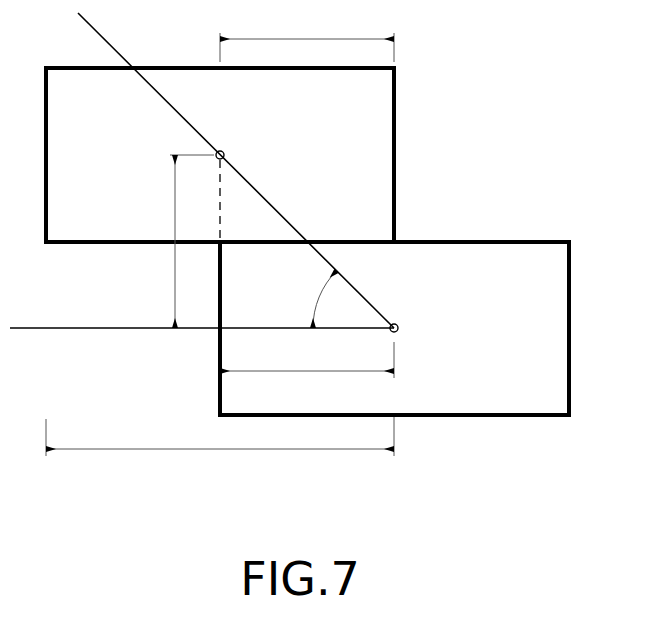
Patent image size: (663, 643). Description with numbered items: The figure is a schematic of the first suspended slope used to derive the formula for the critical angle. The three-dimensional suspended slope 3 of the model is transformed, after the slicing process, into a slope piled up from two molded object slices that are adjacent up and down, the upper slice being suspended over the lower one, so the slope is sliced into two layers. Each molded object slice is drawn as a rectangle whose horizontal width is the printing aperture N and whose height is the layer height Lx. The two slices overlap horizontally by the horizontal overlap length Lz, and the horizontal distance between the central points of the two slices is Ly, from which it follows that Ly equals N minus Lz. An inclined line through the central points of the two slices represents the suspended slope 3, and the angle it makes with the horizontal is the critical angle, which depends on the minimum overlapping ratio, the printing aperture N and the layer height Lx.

The 3D suspended slope 3 is at (275, 203).
The layer height Lx is at (176, 241).
The horizontal overlap length Lz is at (307, 33).
The horizontal distance between central points Ly is at (307, 372).
The printing aperture N is at (220, 450).